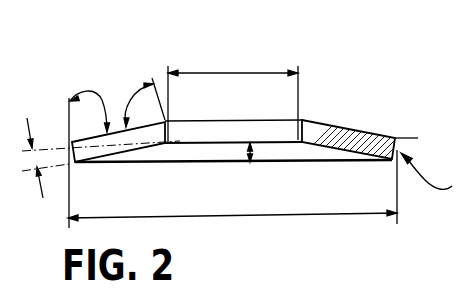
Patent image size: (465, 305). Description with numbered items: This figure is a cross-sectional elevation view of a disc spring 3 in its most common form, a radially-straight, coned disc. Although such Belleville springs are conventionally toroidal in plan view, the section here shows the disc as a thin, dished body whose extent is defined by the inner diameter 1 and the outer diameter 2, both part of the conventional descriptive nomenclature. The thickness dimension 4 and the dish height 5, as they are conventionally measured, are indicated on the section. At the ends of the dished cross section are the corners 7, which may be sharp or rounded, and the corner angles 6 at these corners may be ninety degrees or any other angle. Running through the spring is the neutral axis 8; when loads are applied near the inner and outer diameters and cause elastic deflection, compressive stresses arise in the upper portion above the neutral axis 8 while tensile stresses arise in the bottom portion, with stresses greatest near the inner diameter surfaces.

The inner diameter 1 is at (238, 73).
The outer diameter 2 is at (334, 217).
The disc spring 3 is at (428, 171).
The thickness dimension 4 is at (33, 160).
The dish height 5 is at (255, 154).
The corner angles 6 is at (128, 104).
The corners 7 is at (303, 116).
The neutral axis 8 is at (402, 136).